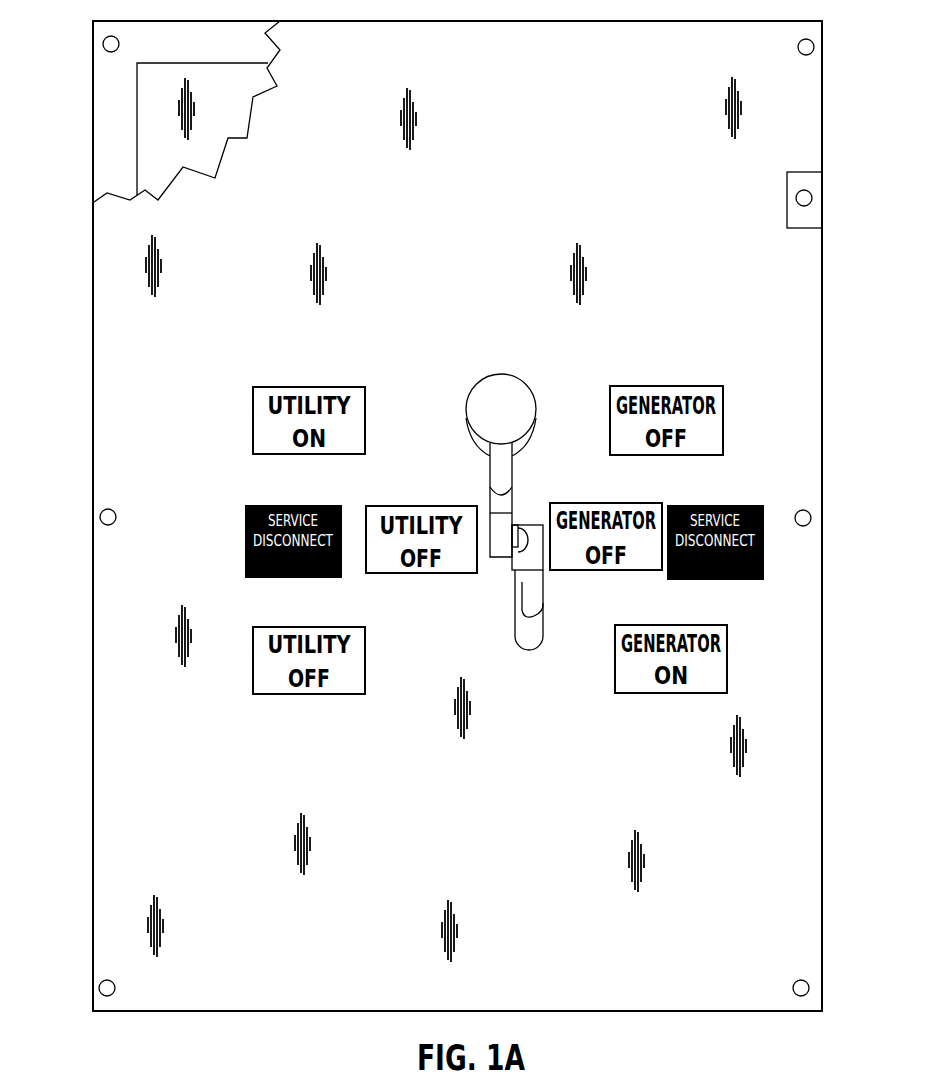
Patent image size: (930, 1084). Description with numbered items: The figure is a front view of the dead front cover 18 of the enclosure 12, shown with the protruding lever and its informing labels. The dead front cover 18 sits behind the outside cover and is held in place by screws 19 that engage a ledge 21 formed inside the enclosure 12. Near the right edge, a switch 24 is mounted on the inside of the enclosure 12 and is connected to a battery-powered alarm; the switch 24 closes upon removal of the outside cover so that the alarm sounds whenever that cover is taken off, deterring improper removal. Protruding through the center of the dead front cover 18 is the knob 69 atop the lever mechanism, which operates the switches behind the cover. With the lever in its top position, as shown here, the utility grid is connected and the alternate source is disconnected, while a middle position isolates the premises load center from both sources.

The enclosure 12 is at (421, 516).
The dead front cover 18 is at (123, 693).
The screws 19 is at (814, 47).
The ledge 21 is at (110, 83).
The switch 24 is at (812, 198).
The knob 69 is at (487, 396).